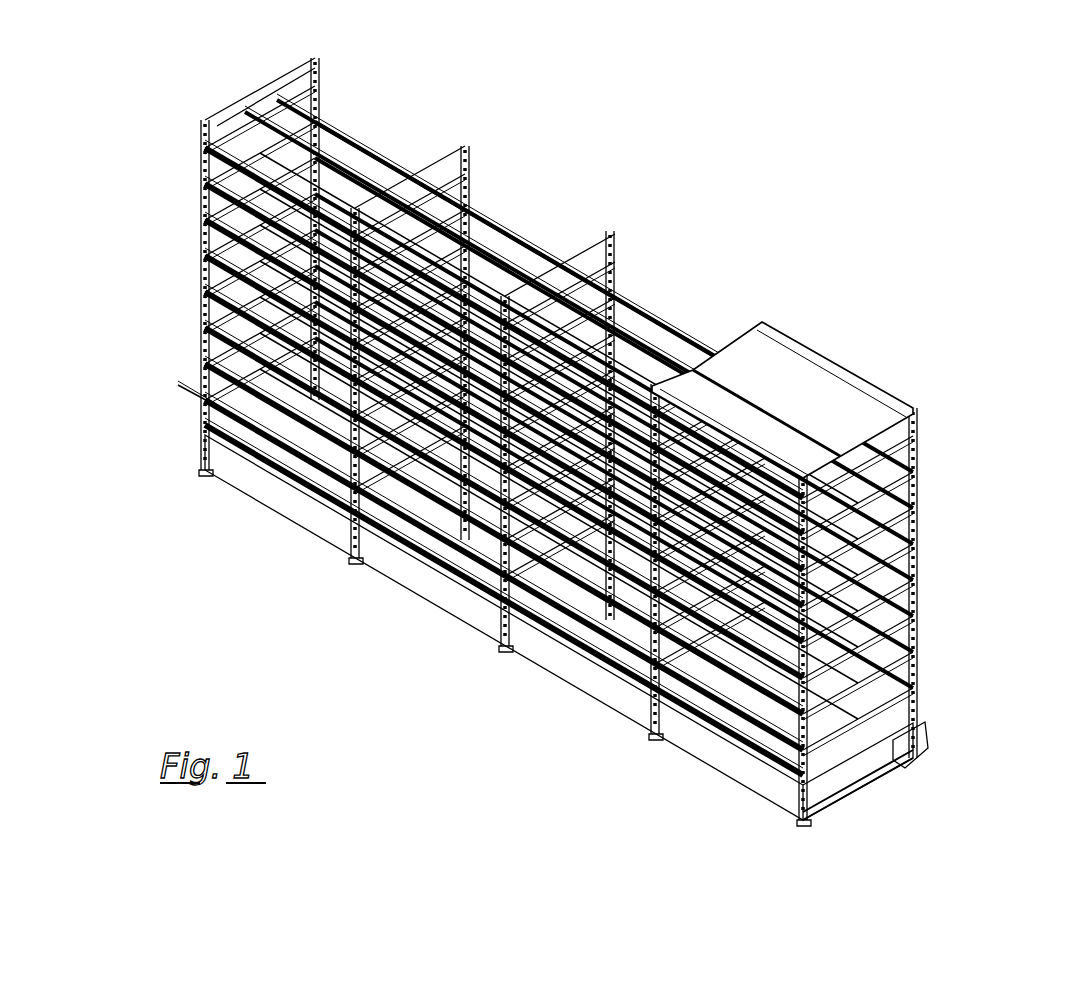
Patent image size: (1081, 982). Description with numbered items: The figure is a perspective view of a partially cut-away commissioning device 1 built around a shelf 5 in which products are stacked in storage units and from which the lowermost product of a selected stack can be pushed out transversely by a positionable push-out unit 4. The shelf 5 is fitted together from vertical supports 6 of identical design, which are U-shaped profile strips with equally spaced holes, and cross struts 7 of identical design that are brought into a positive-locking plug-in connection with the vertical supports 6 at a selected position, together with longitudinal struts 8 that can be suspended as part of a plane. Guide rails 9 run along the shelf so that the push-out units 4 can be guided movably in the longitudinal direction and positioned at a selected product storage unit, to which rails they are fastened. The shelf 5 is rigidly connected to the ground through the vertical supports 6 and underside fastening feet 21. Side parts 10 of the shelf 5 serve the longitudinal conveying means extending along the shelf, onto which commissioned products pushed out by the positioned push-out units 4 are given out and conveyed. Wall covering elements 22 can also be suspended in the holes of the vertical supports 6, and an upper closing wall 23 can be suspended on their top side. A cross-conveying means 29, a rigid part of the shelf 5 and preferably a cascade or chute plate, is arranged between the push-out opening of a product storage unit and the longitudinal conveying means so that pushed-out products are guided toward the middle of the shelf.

The commissioning device 1 is at (858, 202).
The push-out unit 4 is at (213, 347).
The shelf 5 is at (805, 359).
The vertical supports 6 is at (207, 197).
The cross struts 7 is at (230, 298).
The longitudinal struts 8 is at (580, 625).
The guide rails 9 is at (564, 300).
The side parts 10 is at (847, 800).
The fastening feet 21 is at (207, 467).
The wall covering elements 22 is at (702, 742).
The upper closing wall 23 is at (727, 378).
The cross-conveying means 29 is at (915, 758).